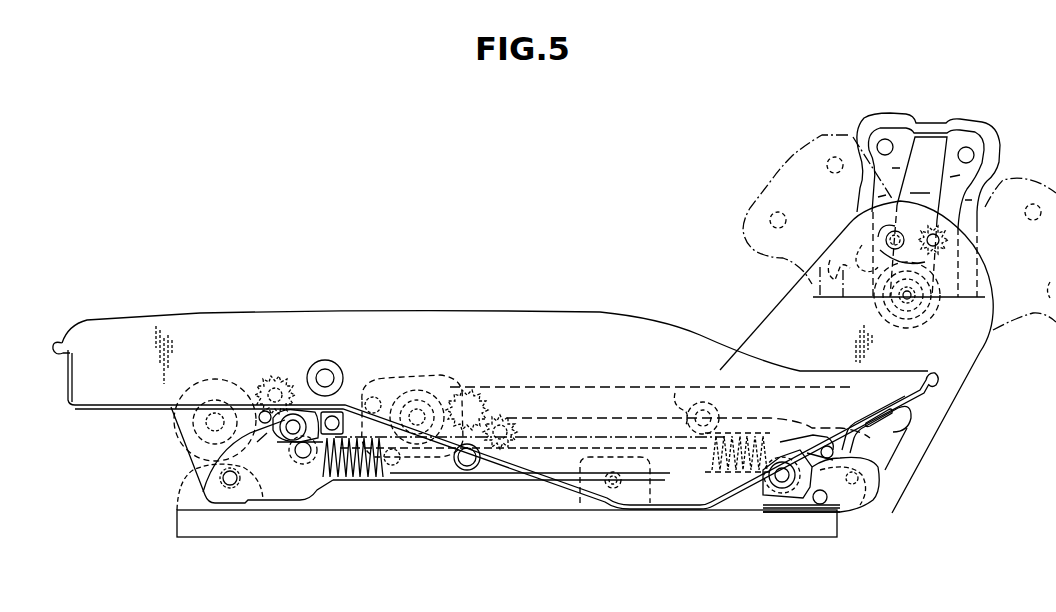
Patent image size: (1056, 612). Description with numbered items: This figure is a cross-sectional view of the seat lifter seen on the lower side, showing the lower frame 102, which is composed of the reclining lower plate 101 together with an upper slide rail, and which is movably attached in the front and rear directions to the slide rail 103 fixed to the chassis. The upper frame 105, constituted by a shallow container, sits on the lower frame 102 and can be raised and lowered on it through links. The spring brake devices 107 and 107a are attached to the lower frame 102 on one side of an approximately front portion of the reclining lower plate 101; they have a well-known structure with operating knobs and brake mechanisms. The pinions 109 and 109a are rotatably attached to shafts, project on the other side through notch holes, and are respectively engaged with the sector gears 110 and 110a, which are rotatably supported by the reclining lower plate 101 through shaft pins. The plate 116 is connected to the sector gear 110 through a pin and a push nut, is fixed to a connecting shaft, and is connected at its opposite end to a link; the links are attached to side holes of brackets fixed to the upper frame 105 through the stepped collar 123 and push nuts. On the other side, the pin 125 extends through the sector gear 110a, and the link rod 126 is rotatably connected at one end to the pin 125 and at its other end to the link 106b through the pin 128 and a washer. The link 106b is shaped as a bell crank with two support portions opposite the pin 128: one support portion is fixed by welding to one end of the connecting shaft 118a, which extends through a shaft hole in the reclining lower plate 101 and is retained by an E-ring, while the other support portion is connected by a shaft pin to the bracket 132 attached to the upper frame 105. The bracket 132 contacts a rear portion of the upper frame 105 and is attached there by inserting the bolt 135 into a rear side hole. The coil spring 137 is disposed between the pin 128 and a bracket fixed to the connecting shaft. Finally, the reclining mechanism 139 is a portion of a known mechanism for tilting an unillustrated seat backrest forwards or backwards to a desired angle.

The reclining lower plate 101 is at (965, 362).
The lower frame 102 is at (770, 332).
The slide rail 103 is at (510, 540).
The upper frame 105 is at (547, 310).
The link 106b is at (777, 513).
The spring brake device 107 is at (207, 385).
The spring brake device 107a is at (418, 393).
The pinion 109 is at (175, 410).
The pinion 109a is at (403, 388).
The sector gear 110 is at (280, 388).
The sector gear 110a is at (485, 400).
The plate 116 is at (203, 470).
The connecting shaft 118a is at (778, 497).
The stepped collar 123 is at (303, 458).
The pin 125 is at (508, 386).
The link rod 126 is at (613, 417).
The pin 128 is at (882, 490).
The bracket 132 is at (882, 455).
The bolt 135 is at (903, 432).
The coil spring 137 is at (365, 480).
The reclining mechanism 139 is at (977, 125).